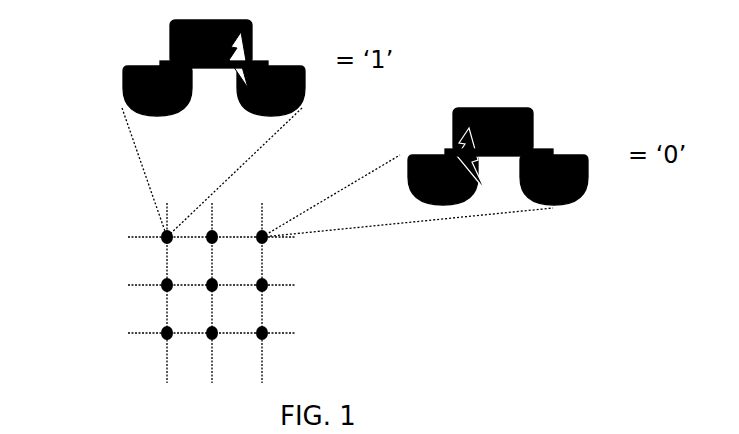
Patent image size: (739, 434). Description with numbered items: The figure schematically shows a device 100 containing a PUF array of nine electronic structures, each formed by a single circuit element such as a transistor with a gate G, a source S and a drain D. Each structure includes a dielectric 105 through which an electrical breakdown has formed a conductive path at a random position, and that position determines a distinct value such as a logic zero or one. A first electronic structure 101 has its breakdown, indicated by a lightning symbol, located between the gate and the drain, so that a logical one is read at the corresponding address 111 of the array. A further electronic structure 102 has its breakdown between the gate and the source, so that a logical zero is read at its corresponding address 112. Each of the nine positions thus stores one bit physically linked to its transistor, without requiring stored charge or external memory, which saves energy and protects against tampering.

The device 100 is at (358, 305).
The first electronic structure 101 is at (135, 45).
The further electronic structure 102 is at (541, 103).
The dielectric 105 is at (268, 62).
The address 111 is at (151, 219).
The address 112 is at (271, 217).